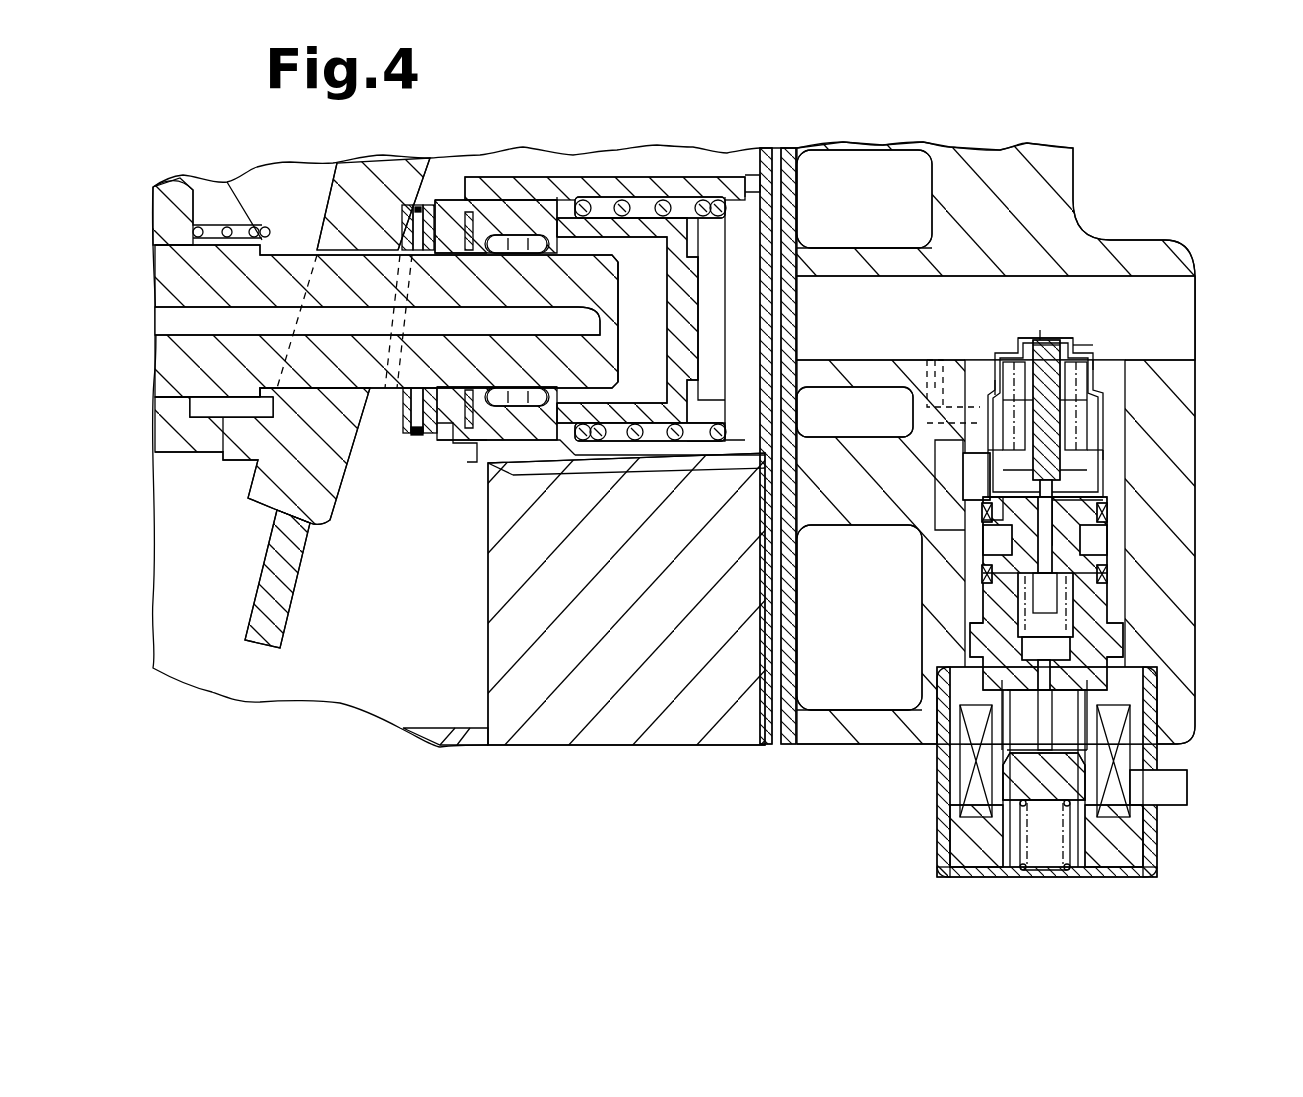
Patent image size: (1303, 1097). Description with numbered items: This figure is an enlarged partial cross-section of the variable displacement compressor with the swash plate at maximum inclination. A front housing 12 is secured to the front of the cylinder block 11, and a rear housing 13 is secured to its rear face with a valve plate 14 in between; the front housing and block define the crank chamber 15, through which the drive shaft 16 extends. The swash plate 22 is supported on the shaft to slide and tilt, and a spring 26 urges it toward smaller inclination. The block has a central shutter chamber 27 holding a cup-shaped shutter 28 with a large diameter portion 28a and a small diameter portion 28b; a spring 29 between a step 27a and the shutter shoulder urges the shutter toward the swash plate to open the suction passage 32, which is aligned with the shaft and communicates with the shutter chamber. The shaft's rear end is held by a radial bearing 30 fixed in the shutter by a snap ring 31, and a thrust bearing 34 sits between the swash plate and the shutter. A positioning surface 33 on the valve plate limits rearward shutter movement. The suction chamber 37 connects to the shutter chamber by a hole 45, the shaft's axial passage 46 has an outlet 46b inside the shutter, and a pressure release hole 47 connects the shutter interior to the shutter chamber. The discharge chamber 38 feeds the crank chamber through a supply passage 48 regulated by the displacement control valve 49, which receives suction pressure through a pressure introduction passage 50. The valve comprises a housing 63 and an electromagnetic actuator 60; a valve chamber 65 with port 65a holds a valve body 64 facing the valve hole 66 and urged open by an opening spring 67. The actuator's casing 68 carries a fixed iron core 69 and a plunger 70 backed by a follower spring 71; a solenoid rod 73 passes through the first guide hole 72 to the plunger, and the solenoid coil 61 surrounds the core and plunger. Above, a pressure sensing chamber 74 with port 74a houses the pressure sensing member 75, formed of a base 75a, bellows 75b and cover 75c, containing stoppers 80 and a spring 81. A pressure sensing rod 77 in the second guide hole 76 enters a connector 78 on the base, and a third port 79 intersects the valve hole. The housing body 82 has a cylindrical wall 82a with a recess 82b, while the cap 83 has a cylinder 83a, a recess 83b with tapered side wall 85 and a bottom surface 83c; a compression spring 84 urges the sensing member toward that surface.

The cylinder block 11 is at (590, 745).
The front housing 12 is at (440, 745).
The rear housing 13 is at (825, 745).
The valve plate 14 is at (775, 745).
The crank chamber 15 is at (397, 688).
The drive shaft 16 is at (393, 400).
The swash plate 22 is at (295, 608).
The spring 26 is at (268, 228).
The shutter chamber 27 is at (693, 447).
The step 27a is at (716, 445).
The shutter 28 is at (490, 199).
The large diameter portion 28a is at (540, 200).
The small diameter portion 28b is at (645, 215).
The spring 29 is at (580, 442).
The radial bearing 30 is at (512, 390).
The snap ring 31 is at (460, 452).
The suction passage 32 is at (1195, 350).
The positioning surface 33 is at (760, 262).
The thrust bearing 34 is at (420, 442).
The suction chamber 37 is at (862, 218).
The discharge chamber 38 is at (842, 578).
The hole 45 is at (760, 392).
The axial passage 46 is at (190, 325).
The outlet 46b is at (590, 310).
The pressure release hole 47 is at (650, 400).
The supply passage 48 is at (520, 475).
The displacement control valve 49 is at (921, 839).
The pressure introduction passage 50 is at (937, 360).
The electromagnetic actuator 60 is at (1112, 662).
The solenoid coil 61 is at (1130, 775).
The housing 63 is at (1005, 575).
The valve body 64 is at (1050, 600).
The valve chamber 65 is at (1005, 595).
The port 65a is at (975, 625).
The valve hole 66 is at (1105, 540).
The opening spring 67 is at (1105, 575).
The casing 68 is at (1047, 872).
The fixed iron core 69 is at (1005, 690).
The plunger 70 is at (1125, 840).
The follower spring 71 is at (1024, 872).
The first guide hole 72 is at (1040, 705).
The solenoid rod 73 is at (1010, 760).
The pressure sensing chamber 74 is at (1105, 420).
The pressure introduction port 74a is at (1000, 385).
The pressure sensing member 75 is at (1020, 345).
The base 75a is at (1110, 455).
The bellows 75b is at (1095, 365).
The cover 75c is at (1090, 356).
The second guide hole 76 is at (1060, 505).
The pressure sensing rod 77 is at (1000, 470).
The connector 78 is at (1105, 450).
The third port 79 is at (985, 530).
The stoppers 80 is at (1100, 395).
The spring 81 is at (1005, 370).
The housing body 82 is at (1105, 513).
The cylindrical wall 82a is at (1100, 483).
The recess 82b is at (1110, 493).
The cap 83 is at (1060, 345).
The cylinder 83a is at (985, 420).
The recess 83b is at (1050, 338).
The bottom surface 83c is at (1080, 352).
The compression spring 84 is at (1035, 510).
The side wall 85 is at (1040, 340).